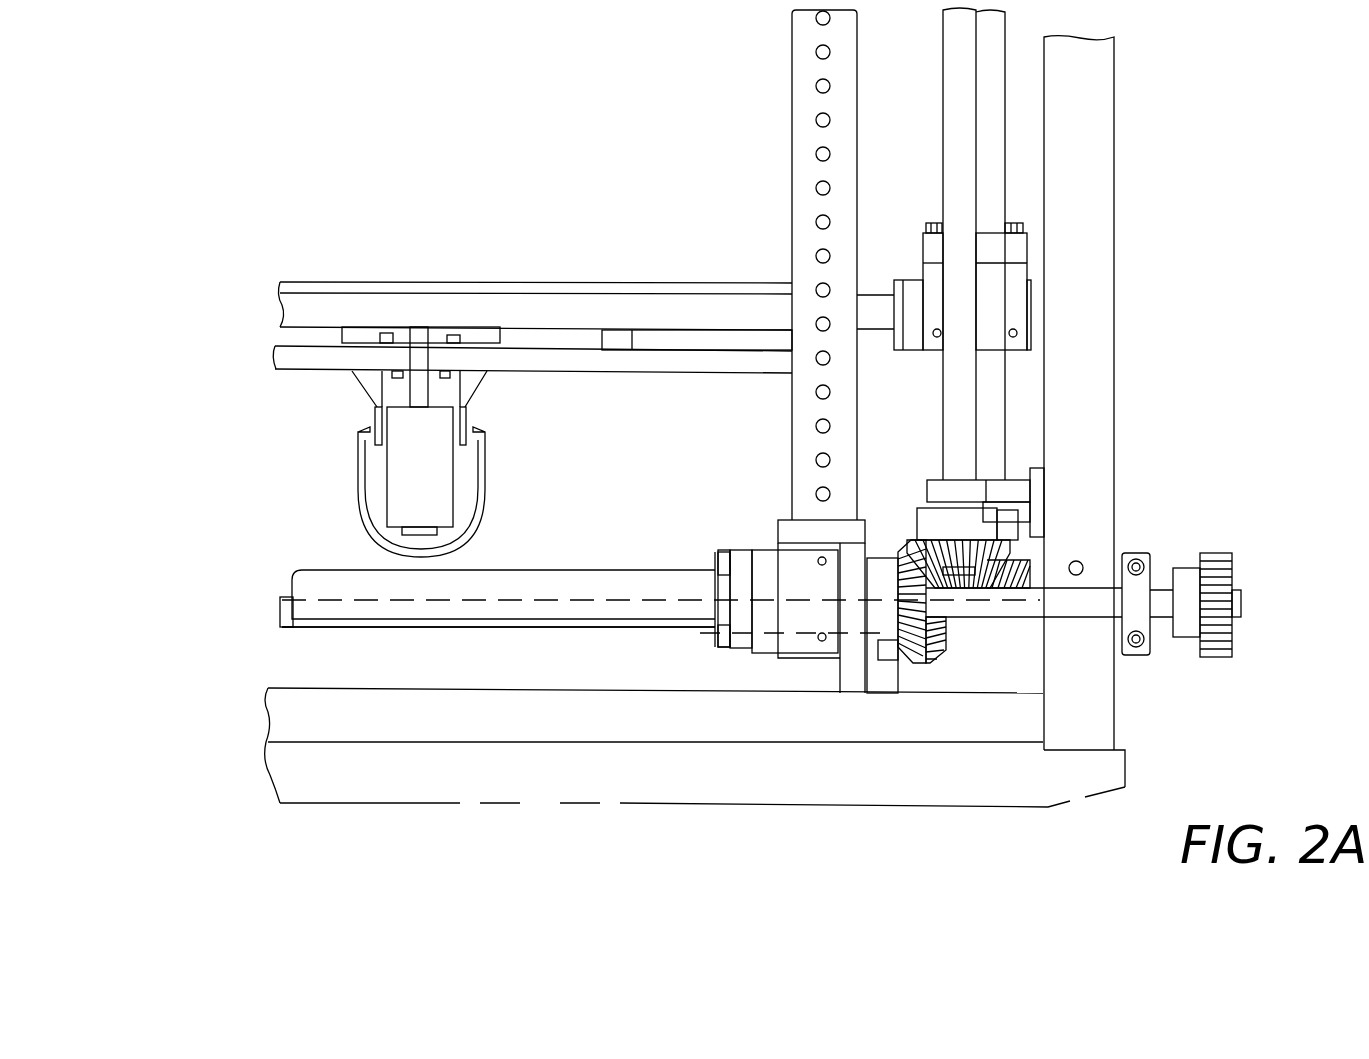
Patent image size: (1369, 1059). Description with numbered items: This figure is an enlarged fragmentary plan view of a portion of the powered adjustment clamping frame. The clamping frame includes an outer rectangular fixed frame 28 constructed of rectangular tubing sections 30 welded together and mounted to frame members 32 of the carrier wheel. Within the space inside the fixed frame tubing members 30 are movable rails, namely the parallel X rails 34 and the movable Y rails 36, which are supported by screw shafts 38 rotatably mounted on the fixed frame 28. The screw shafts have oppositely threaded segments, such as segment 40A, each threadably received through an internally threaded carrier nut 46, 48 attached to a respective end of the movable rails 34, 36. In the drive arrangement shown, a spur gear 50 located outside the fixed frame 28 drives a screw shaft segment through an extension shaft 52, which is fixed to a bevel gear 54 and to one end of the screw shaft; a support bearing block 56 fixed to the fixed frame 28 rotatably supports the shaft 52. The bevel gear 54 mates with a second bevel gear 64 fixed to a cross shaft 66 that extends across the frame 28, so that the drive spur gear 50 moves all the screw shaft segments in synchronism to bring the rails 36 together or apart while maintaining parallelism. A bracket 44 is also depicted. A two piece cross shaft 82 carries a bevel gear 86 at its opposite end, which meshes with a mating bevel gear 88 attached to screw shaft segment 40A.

The outer rectangular fixed frame 28 is at (1130, 230).
The rectangular tubing sections 30 is at (1099, 144).
The frame members 32 is at (1108, 793).
The X rails 34 is at (530, 315).
The Y rails 36 is at (790, 413).
The screw shafts 38 is at (595, 568).
The screw shaft segment 40A is at (1003, 395).
The bracket 44 is at (1012, 475).
The carrier nut 46 is at (808, 595).
The carrier nut 48 is at (1003, 282).
The spur gear 50 is at (1215, 553).
The extension shaft 52 is at (1081, 620).
The bevel gear 54 is at (927, 650).
The support bearing block 56 is at (1140, 553).
The second bevel gear 64 is at (927, 548).
The cross shaft 66 is at (941, 397).
The two piece cross shaft 82 is at (332, 628).
The bevel gear 86 is at (947, 642).
The mating bevel gear 88 is at (1022, 573).